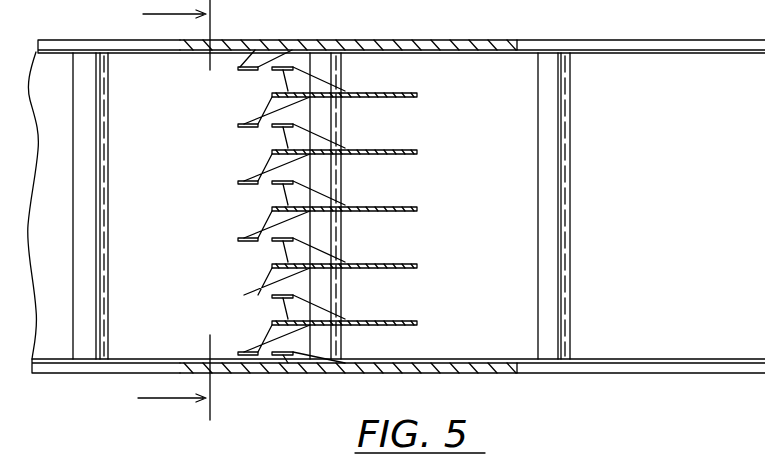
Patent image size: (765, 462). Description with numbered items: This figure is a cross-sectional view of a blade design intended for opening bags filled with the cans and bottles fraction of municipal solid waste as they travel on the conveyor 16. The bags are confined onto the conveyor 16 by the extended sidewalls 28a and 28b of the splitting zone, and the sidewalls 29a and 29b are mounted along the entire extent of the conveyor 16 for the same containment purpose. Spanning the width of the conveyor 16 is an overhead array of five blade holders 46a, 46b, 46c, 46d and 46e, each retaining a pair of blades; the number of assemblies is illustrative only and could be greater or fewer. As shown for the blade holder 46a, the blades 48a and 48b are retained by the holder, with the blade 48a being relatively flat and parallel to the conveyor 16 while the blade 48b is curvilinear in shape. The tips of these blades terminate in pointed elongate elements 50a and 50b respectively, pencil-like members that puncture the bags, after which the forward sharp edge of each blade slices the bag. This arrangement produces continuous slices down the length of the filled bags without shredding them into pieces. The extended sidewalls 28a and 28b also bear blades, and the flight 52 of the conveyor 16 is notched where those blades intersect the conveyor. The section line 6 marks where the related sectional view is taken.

The section line 6- 6 is at (184, 210).
The conveyor 16 is at (640, 212).
The extended sidewall 28a is at (497, 373).
The extended sidewall 28b is at (415, 40).
The sidewall 29a is at (593, 373).
The sidewall 29b is at (600, 40).
The blade holder 46a is at (407, 321).
The blade holder 46b is at (413, 264).
The blade holder 46c is at (416, 210).
The blade holder 46d is at (413, 154).
The blade holder 46e is at (413, 97).
The blade 48a is at (265, 336).
The blade 48b is at (275, 294).
The pointed elongate element 50a is at (256, 355).
The pointed elongate element 50b is at (292, 294).
The flight 52 is at (110, 238).